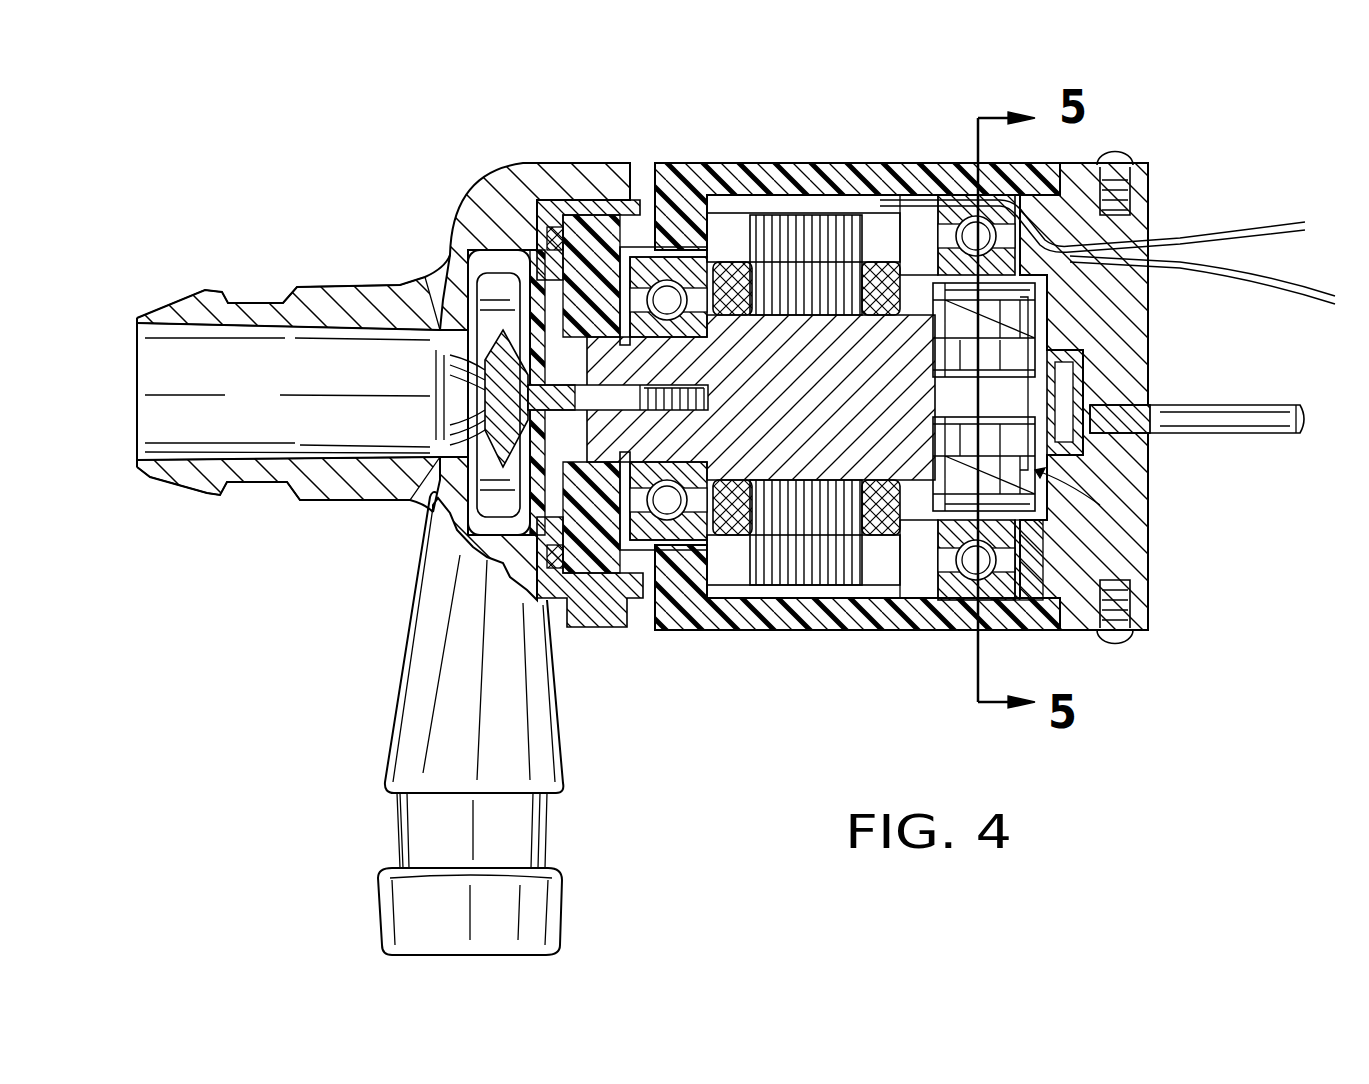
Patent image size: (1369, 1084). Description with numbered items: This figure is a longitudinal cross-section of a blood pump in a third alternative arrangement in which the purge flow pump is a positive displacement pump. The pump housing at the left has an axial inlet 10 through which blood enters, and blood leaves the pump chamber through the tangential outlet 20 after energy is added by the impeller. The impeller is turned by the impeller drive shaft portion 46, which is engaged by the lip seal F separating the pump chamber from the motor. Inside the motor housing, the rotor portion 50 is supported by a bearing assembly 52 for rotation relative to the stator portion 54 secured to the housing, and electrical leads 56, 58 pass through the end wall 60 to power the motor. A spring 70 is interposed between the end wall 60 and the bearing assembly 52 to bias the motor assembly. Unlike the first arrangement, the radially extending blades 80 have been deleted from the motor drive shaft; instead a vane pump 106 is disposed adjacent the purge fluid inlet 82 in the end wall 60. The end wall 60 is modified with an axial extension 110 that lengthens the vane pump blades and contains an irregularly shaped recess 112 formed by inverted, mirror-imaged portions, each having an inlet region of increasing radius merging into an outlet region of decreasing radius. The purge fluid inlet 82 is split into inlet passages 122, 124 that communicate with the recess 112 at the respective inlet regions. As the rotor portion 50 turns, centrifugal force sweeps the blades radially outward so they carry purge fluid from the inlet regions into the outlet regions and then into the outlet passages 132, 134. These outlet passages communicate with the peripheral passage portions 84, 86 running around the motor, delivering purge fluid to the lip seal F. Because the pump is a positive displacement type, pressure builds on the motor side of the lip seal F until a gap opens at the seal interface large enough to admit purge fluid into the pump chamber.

The axial inlet 10 is at (267, 388).
The tangential outlet 20 is at (425, 728).
The impeller drive shaft portion 46 is at (612, 380).
The rotor portion 50 is at (790, 403).
The bearing assembly 52 is at (968, 600).
The stator portion 54 is at (790, 213).
The electrical lead 56 is at (1160, 240).
The electrical lead 58 is at (1165, 268).
The end wall 60 is at (1118, 396).
The spring 70 is at (1045, 600).
The radially extending blades 80 is at (690, 550).
The purge fluid inlet 82 is at (1150, 424).
The peripheral passage portion 84 is at (935, 625).
The peripheral passage portion 86 is at (818, 600).
The vane pump 106 is at (1050, 500).
The axial extension 110 is at (945, 330).
The irregularly shaped recess 112 is at (945, 435).
The inlet passage 122 is at (1062, 352).
The inlet passage 124 is at (1100, 455).
The outlet passage 132 is at (945, 470).
The outlet passage 134 is at (940, 325).
The lip seal F is at (540, 475).